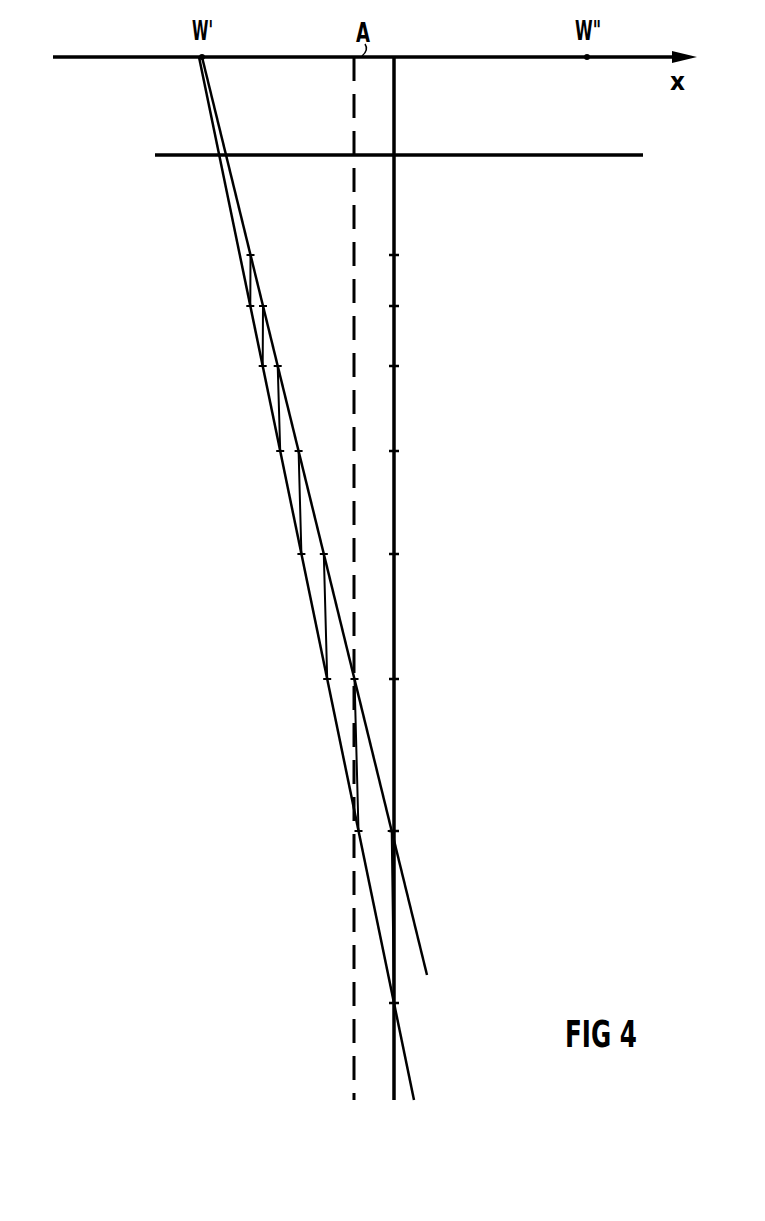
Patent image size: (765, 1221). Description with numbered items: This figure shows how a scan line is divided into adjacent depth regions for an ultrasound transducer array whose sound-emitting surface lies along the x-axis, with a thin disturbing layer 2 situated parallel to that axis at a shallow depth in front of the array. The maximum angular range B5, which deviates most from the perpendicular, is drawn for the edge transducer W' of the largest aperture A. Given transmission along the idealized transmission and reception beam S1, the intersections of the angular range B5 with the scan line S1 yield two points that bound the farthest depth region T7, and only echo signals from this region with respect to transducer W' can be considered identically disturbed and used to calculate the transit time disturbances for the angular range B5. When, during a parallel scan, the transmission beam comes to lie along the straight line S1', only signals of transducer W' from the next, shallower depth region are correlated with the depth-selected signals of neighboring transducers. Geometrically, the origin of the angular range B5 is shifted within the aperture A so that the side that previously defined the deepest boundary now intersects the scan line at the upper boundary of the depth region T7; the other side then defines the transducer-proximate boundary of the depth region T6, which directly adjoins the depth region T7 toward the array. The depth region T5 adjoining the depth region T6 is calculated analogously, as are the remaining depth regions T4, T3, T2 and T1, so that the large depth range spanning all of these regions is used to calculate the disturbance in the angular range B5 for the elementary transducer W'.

The thin disturbing layer 2 is at (582, 156).
The angular range B5 is at (232, 207).
The transmission beam S1 is at (458, 578).
The straight line S1' is at (335, 578).
The depth region T1 is at (395, 278).
The depth region T2 is at (395, 335).
The depth region T3 is at (395, 410).
The depth region T4 is at (395, 503).
The depth region T5 is at (395, 617).
The depth region T6 is at (395, 755).
The depth region T7 is at (395, 927).